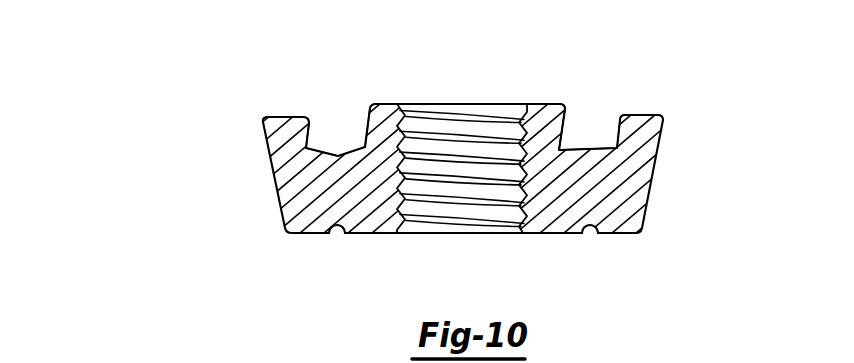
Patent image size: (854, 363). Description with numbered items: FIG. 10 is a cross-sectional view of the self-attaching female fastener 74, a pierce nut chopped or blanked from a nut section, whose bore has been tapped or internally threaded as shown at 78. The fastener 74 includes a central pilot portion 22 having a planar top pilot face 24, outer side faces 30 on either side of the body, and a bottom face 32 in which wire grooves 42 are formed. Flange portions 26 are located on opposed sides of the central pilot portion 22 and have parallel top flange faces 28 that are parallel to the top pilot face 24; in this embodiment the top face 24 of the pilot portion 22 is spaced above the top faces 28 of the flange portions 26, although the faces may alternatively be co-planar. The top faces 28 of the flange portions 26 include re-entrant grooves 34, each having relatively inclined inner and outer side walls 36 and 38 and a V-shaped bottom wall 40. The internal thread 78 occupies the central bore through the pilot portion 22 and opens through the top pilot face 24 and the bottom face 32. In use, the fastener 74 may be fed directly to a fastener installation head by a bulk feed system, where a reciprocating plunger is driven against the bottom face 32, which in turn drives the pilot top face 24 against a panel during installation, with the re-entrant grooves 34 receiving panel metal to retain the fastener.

The self-attaching female fastener 74 is at (473, 148).
The side faces 30 is at (648, 193).
The internal thread 78 is at (462, 233).
The flange portions 26 is at (254, 130).
The top flange faces 28 is at (287, 116).
The outer side wall 38 is at (307, 127).
The V-shaped bottom wall 40 is at (338, 152).
The inner side wall 36 is at (353, 110).
The top pilot face 24 is at (535, 103).
The central pilot portion 22 is at (573, 101).
The re-entrant grooves 34 is at (588, 140).
The bottom face 32 is at (380, 233).
The wire grooves 42 is at (340, 224).